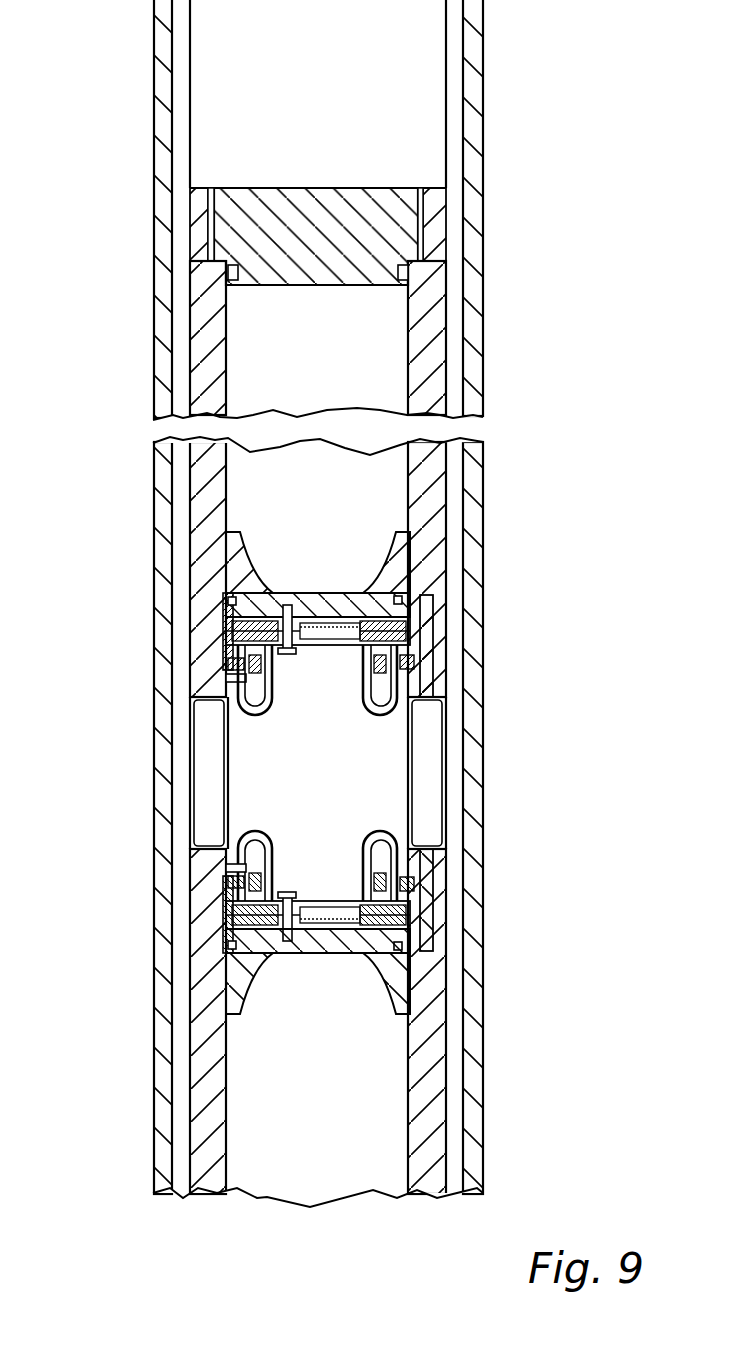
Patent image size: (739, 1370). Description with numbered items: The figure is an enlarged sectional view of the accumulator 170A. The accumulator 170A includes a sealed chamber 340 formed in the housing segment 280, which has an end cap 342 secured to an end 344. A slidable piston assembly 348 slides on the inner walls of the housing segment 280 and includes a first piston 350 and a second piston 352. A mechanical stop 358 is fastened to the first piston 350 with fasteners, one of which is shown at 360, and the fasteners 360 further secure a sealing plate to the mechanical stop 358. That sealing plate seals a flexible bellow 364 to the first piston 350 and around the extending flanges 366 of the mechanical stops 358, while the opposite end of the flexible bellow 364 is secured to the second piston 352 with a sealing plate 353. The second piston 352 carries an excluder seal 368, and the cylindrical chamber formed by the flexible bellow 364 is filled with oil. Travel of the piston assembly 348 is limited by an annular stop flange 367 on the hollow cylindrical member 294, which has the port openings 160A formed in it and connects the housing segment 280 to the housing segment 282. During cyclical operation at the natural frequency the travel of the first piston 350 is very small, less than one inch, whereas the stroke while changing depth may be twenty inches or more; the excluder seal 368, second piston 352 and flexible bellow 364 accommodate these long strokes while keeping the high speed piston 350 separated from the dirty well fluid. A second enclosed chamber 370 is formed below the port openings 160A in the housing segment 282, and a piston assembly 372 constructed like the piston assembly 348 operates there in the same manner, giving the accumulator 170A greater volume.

The port openings 160A is at (456, 742).
The accumulator 170A is at (510, 458).
The housing segment 280 is at (458, 340).
The housing segment 282 is at (453, 1078).
The hollow cylindrical member 294 is at (433, 608).
The sealed chamber 340 is at (407, 348).
The end cap 342 is at (383, 200).
The end 344 is at (453, 200).
The slidable piston assembly 348 is at (278, 585).
The first piston 350 is at (407, 545).
The second piston 352 is at (380, 655).
The sealing plate 353 is at (213, 653).
The mechanical stop 358 is at (237, 680).
The fastener 360 is at (268, 700).
The flexible bellow 364 is at (373, 705).
The extending flanges 366 is at (400, 710).
The annular stop flange 367 is at (407, 667).
The excluder seal 368 is at (217, 665).
The second enclosed chamber 370 is at (400, 1045).
The piston assembly 372 is at (316, 890).